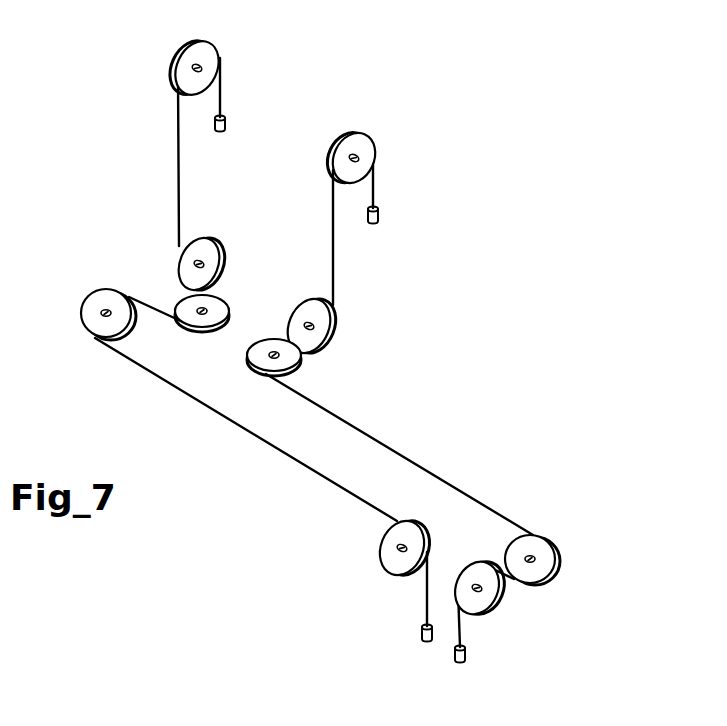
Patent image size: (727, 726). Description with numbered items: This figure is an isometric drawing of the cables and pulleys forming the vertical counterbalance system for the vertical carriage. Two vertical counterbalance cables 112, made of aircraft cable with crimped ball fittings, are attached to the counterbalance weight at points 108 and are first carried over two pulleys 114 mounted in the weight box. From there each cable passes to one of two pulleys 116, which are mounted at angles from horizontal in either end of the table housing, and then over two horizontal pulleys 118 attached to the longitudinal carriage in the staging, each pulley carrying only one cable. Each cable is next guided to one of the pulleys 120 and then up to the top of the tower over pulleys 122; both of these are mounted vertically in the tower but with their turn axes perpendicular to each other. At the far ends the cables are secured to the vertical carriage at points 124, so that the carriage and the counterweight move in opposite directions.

The attachment points 108 is at (421, 637).
The vertical counterbalance cables 112 is at (157, 306).
The pulleys 114 is at (388, 548).
The pulleys 116 is at (112, 293).
The horizontal pulleys 118 is at (222, 313).
The pulleys 120 is at (212, 262).
The pulleys 122 is at (214, 52).
The attachment points 124 is at (226, 130).